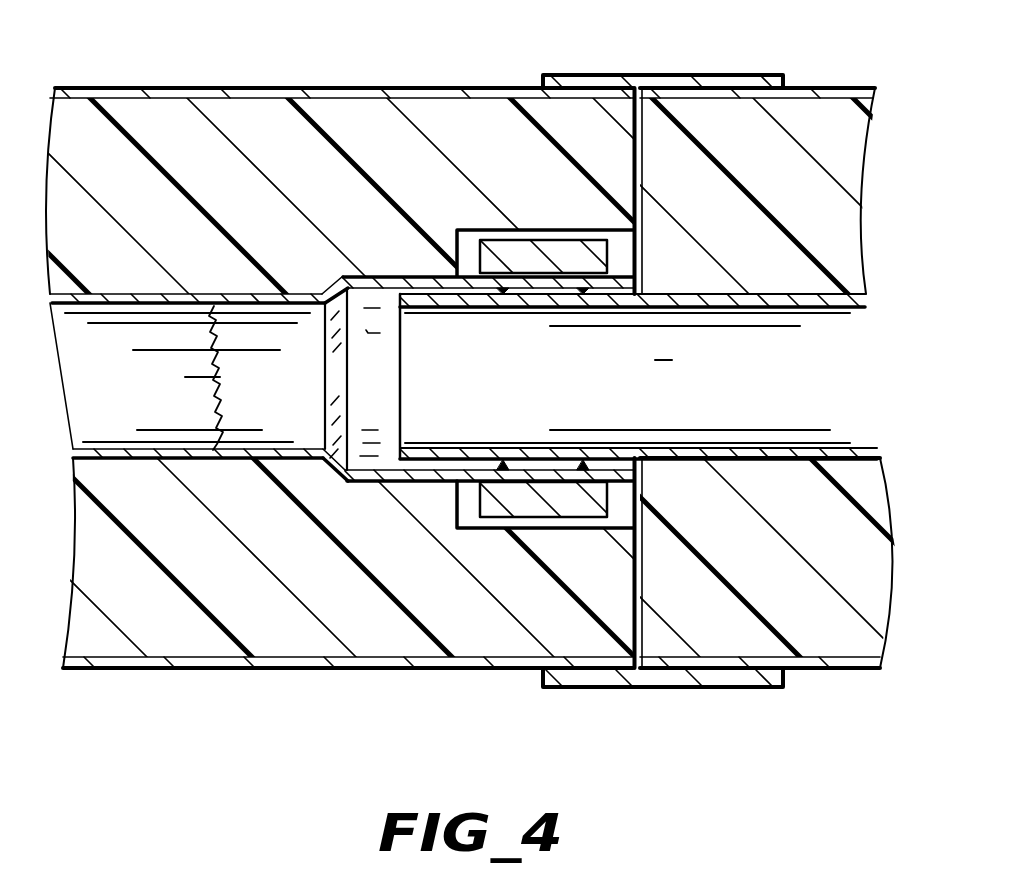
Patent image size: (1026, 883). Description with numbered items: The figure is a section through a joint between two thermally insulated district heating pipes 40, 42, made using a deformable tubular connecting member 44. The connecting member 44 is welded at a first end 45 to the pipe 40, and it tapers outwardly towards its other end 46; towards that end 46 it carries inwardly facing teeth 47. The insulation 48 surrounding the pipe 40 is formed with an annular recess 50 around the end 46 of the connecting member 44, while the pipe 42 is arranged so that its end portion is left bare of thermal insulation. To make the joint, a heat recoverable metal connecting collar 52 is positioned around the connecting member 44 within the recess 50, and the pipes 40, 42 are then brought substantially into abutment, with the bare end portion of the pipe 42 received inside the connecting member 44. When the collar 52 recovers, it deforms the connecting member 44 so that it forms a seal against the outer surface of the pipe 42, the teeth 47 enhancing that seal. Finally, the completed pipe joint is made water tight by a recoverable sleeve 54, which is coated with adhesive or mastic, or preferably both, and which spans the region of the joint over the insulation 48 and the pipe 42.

The district heating pipe 40 is at (133, 292).
The district heating pipe 42 is at (755, 293).
The deformable tubular connecting member 44 is at (410, 277).
The first end 45 is at (217, 403).
The other end 46 is at (627, 482).
The inwardly facing teeth 47 is at (583, 463).
The insulation 48 is at (317, 173).
The annular recess 50 is at (620, 250).
The heat recoverable metal connecting collar 52 is at (483, 500).
The recoverable sleeve 54 is at (737, 677).